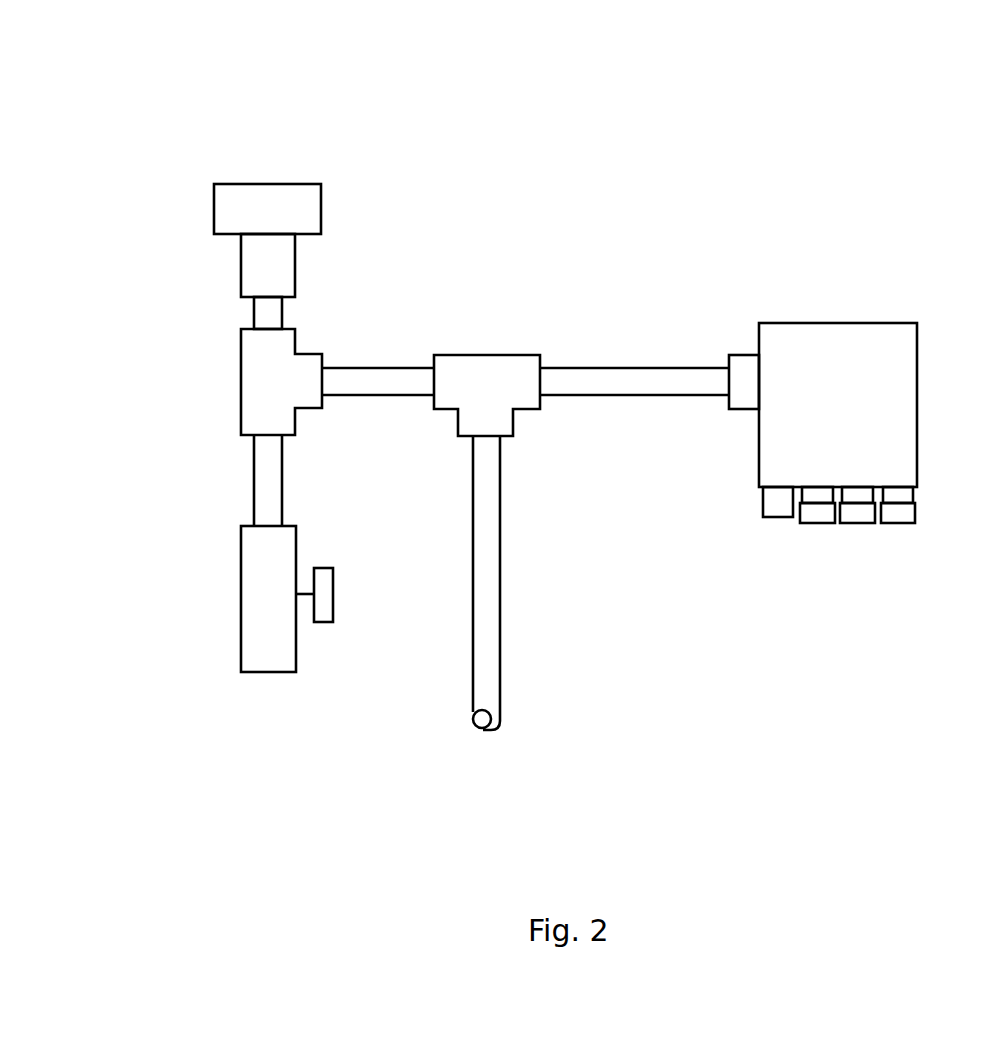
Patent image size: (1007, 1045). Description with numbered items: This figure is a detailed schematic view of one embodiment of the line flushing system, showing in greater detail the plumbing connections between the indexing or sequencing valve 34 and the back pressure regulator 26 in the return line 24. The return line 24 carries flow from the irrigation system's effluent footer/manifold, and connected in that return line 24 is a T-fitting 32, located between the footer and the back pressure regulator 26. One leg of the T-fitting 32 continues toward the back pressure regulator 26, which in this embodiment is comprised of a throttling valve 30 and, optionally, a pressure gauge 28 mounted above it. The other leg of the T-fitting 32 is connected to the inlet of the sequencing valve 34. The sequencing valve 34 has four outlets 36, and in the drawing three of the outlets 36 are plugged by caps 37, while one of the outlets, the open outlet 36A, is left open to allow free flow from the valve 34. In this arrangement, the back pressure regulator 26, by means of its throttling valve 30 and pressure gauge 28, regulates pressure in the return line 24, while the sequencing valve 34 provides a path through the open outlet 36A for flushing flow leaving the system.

The return line 24 is at (487, 665).
The back pressure regulator 26 is at (192, 339).
The pressure gauge 28 is at (257, 182).
The throttling valve 30 is at (258, 598).
The T-fitting 32 is at (477, 369).
The indexing or sequencing valve 34 is at (812, 358).
The outlets 36 is at (903, 497).
The open outlet 36A is at (775, 513).
The caps 37 is at (822, 520).